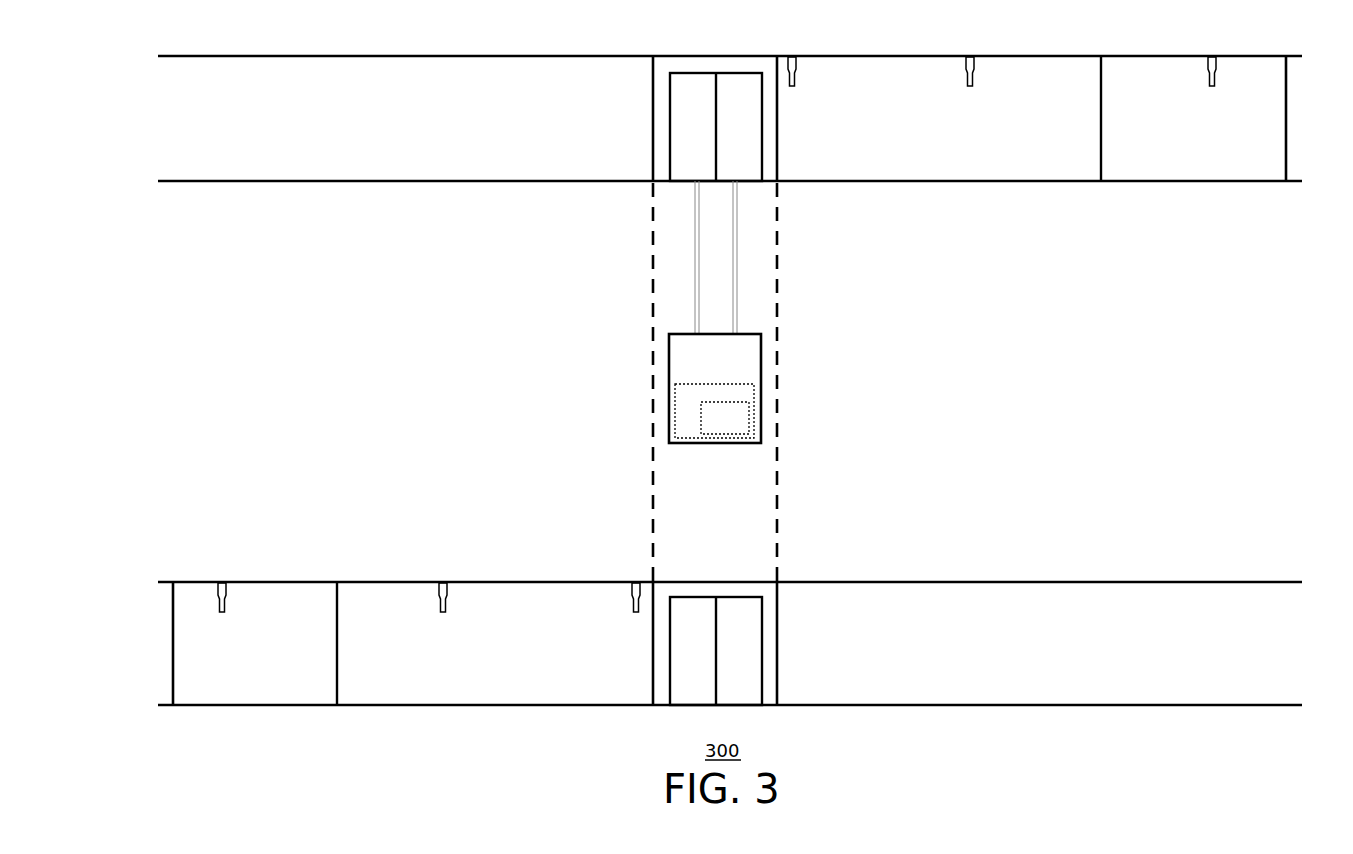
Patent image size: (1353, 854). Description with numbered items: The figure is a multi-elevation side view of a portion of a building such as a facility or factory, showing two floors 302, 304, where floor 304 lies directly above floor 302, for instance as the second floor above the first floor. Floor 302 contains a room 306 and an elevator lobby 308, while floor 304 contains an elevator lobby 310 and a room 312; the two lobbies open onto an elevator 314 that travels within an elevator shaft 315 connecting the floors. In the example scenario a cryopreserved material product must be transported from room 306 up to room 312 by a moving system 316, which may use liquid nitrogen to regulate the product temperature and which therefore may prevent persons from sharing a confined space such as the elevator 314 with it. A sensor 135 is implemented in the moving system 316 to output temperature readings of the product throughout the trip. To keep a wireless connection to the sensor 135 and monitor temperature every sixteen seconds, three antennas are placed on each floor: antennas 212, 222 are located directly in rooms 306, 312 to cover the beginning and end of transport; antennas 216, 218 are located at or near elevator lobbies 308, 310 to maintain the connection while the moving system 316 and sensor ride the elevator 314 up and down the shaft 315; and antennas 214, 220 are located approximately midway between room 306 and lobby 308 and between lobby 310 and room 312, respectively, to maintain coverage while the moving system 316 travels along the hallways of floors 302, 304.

The floor 302 is at (731, 633).
The floor 304 is at (731, 105).
The room 306 is at (185, 676).
The elevator lobby 308 is at (780, 606).
The elevator lobby 310 is at (660, 93).
The room 312 is at (1273, 131).
The elevator 314 is at (763, 346).
The elevator shaft 315 is at (779, 371).
The moving system 316 is at (756, 404).
The sensor 135 is at (725, 418).
The antenna 212 is at (228, 598).
The antenna 214 is at (449, 598).
The antenna 216 is at (630, 599).
The antenna 218 is at (798, 72).
The antenna 220 is at (964, 74).
The antenna 222 is at (1205, 74).